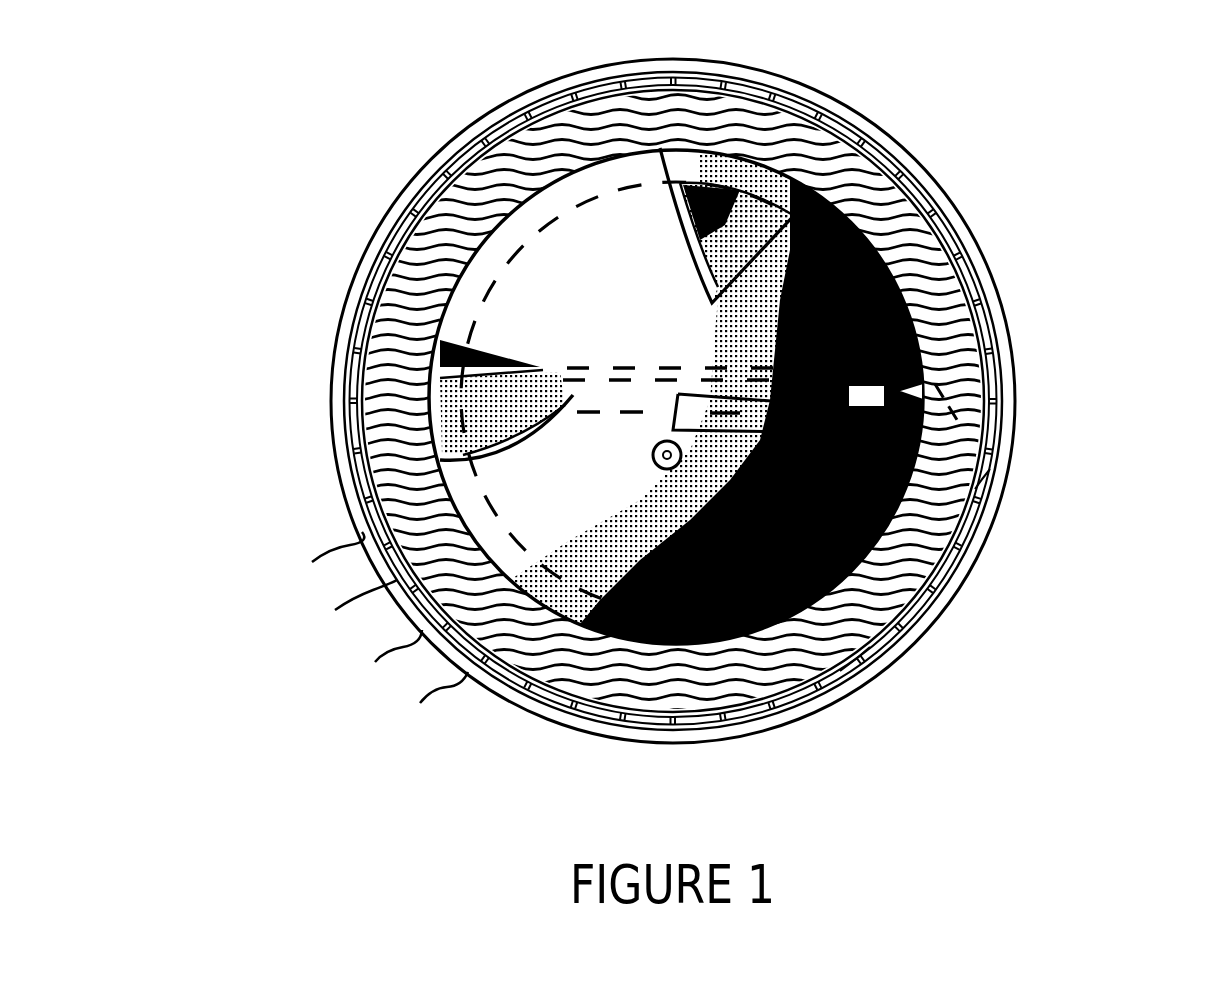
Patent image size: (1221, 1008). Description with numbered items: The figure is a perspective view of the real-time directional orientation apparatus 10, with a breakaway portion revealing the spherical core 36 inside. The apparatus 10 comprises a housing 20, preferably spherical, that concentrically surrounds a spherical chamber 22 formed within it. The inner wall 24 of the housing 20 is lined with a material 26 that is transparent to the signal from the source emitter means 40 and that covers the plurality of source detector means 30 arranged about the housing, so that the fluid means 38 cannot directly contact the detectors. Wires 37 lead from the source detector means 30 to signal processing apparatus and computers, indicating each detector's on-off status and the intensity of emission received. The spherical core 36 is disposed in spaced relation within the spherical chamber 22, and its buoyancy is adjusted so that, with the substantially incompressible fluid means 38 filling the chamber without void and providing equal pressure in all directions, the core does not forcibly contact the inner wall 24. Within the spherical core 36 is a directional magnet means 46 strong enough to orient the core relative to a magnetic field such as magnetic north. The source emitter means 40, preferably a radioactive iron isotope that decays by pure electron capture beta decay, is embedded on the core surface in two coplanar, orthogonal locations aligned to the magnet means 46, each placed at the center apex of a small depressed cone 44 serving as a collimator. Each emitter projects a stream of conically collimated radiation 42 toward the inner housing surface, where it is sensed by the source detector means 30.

The real-time directional orientation apparatus 10 is at (262, 193).
The housing 20 is at (533, 714).
The spherical chamber 22 is at (748, 112).
The inner wall 24 is at (357, 443).
The material 26 is at (880, 652).
The source detector means 30 is at (915, 216).
The spherical core 36 is at (536, 186).
The wires 37 is at (411, 689).
The fluid means 38 is at (436, 242).
The source emitter means 40 is at (912, 390).
The conically collimated radiation 42 is at (982, 500).
The depressed cone 44 is at (925, 440).
The directional magnet means 46 is at (545, 368).